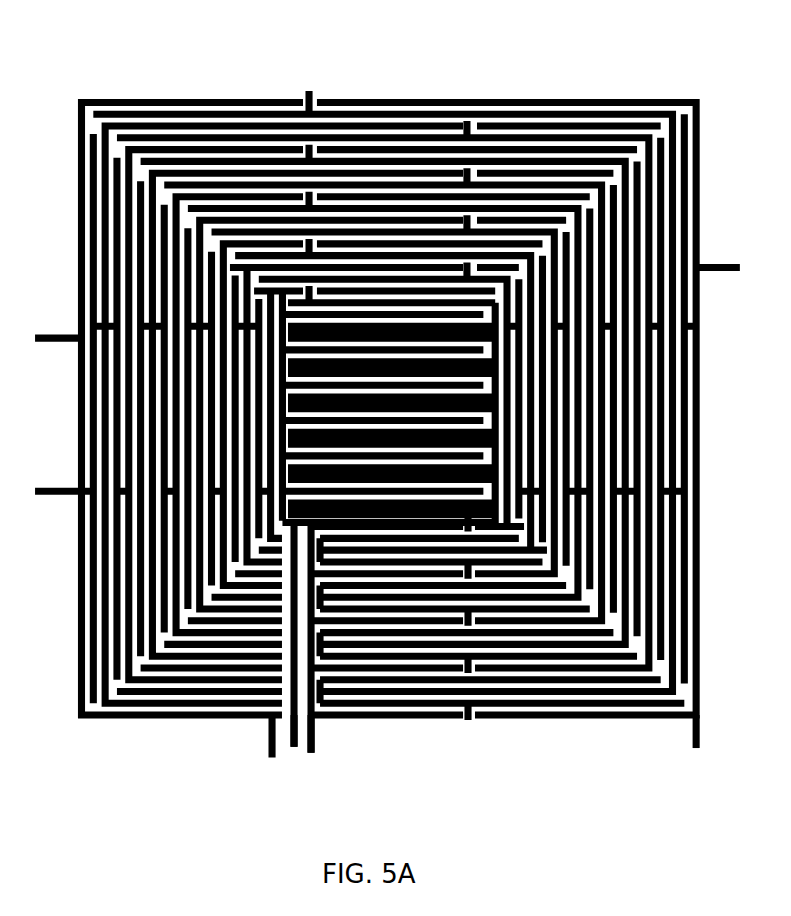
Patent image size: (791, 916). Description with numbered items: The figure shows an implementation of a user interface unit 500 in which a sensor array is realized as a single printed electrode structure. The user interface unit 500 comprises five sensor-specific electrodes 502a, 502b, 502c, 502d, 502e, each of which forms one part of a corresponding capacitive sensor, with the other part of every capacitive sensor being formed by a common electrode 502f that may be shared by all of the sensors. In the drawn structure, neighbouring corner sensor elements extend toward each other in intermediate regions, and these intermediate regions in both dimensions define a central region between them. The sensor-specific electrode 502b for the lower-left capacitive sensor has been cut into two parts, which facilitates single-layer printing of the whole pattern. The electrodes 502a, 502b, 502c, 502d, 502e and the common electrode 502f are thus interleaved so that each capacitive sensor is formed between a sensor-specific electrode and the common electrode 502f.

The user interface unit 500 is at (388, 403).
The sensor-specific electrode 502a is at (54, 333).
The sensor-specific electrode 502b is at (313, 746).
The sensor-specific electrode 502c is at (731, 263).
The sensor-specific electrode 502d is at (698, 718).
The sensor-specific electrode 502e is at (296, 748).
The common electrode 502f is at (52, 487).